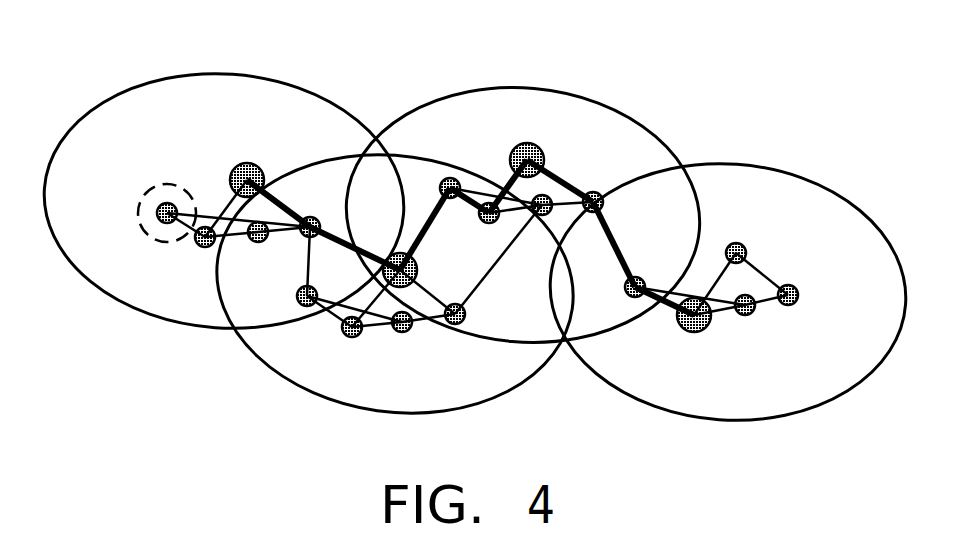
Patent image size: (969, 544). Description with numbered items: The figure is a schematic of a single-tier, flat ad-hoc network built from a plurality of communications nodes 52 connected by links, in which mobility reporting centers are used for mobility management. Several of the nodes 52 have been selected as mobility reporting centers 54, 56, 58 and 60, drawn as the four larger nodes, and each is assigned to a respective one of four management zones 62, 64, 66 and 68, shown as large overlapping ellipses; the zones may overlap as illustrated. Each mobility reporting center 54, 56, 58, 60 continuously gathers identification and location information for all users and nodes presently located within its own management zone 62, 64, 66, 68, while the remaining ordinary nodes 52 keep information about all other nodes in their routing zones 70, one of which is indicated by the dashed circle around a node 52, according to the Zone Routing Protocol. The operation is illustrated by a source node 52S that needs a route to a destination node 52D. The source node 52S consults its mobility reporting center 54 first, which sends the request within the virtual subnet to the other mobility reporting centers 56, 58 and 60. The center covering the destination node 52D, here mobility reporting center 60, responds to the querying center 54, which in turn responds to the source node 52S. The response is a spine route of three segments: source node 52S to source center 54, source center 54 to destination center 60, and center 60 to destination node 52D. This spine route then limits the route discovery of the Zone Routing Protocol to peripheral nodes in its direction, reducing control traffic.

The communications node 52 is at (168, 203).
The source node 52S is at (203, 250).
The destination node 52D is at (745, 257).
The mobility reporting center (MRC) 54 is at (248, 163).
The mobility reporting center (MRC) 56 is at (420, 270).
The mobility reporting center (MRC) 58 is at (513, 152).
The mobility reporting center (MRC) 60 is at (693, 327).
The management zone 62 is at (268, 112).
The management zone 64 is at (327, 375).
The management zone 66 is at (560, 123).
The management zone 68 is at (742, 192).
The routing zone 70 is at (135, 212).